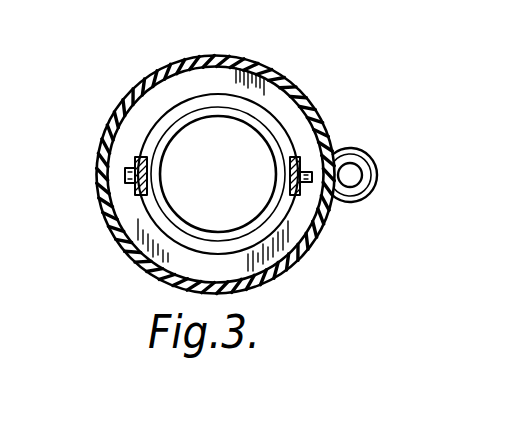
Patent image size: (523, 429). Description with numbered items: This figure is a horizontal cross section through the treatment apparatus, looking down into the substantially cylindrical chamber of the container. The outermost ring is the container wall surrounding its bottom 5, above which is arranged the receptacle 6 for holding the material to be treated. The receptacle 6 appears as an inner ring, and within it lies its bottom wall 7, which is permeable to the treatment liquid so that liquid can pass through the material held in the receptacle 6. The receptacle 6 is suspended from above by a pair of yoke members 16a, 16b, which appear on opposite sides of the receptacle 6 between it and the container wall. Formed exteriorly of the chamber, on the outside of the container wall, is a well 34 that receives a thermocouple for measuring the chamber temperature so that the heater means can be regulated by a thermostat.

The bottom 5 is at (230, 265).
The receptacle 6 is at (233, 112).
The bottom wall 7 is at (228, 174).
The yoke member 16a is at (140, 192).
The yoke member 16b is at (302, 192).
The well 34 is at (364, 186).